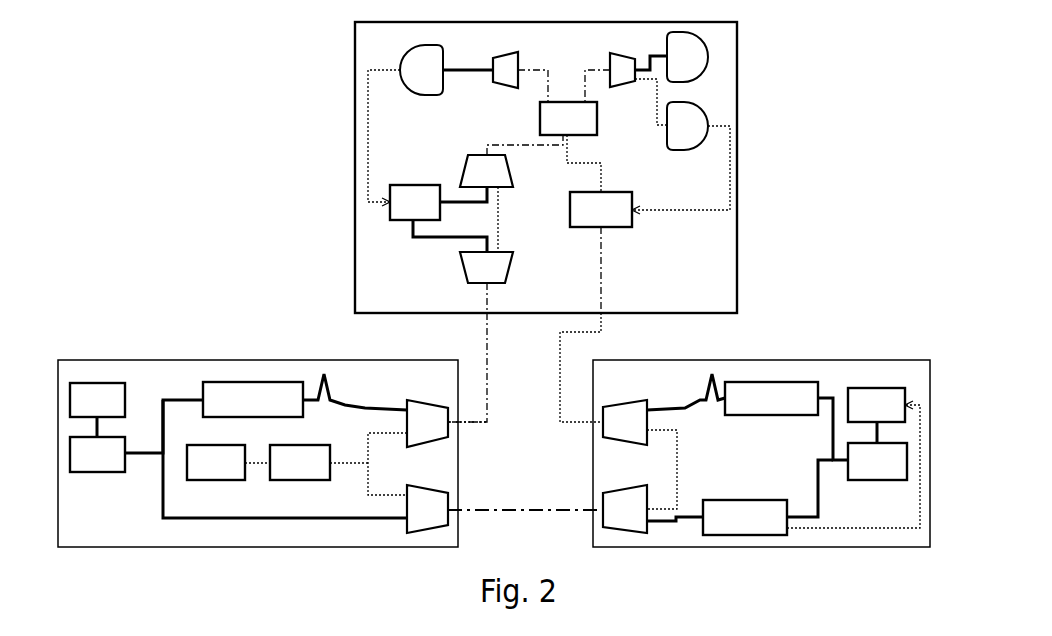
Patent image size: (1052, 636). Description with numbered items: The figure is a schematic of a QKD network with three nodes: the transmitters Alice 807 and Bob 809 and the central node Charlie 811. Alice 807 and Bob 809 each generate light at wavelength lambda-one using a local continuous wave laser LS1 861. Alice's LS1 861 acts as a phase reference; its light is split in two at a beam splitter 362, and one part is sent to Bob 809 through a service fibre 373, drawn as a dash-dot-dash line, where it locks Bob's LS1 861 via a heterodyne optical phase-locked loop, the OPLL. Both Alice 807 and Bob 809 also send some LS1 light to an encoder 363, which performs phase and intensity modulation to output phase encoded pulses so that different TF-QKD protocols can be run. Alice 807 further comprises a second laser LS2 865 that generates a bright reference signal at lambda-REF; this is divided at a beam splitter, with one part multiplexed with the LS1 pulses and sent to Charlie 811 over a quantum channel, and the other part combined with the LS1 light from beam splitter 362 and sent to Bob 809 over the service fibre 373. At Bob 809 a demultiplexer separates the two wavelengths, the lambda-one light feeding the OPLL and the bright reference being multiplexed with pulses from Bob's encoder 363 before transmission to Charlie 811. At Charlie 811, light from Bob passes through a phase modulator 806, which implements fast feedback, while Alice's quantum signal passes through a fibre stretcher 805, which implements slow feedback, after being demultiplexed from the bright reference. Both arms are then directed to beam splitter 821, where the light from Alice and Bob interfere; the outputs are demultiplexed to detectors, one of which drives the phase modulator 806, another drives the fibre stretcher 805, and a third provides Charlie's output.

The Charlie 811 is at (742, 281).
The beam splitter 821 is at (537, 117).
The fibre stretcher 805 is at (410, 222).
The phase modulator 806 is at (628, 222).
The Alice 807 is at (398, 370).
The Bob 809 is at (622, 357).
The LS1 861 is at (97, 383).
The encoder 363 is at (253, 382).
The beam splitter 362 is at (97, 472).
The second light source LS2 865 is at (213, 480).
The service fibre 373 is at (495, 508).